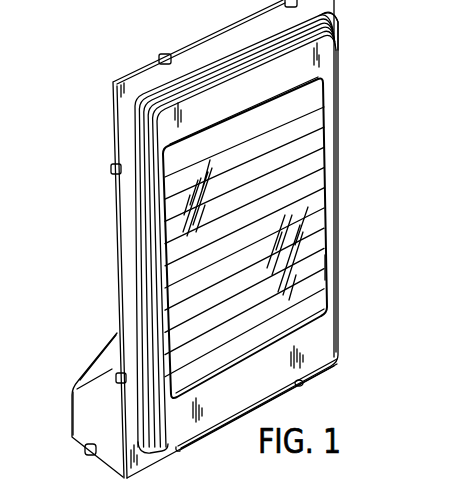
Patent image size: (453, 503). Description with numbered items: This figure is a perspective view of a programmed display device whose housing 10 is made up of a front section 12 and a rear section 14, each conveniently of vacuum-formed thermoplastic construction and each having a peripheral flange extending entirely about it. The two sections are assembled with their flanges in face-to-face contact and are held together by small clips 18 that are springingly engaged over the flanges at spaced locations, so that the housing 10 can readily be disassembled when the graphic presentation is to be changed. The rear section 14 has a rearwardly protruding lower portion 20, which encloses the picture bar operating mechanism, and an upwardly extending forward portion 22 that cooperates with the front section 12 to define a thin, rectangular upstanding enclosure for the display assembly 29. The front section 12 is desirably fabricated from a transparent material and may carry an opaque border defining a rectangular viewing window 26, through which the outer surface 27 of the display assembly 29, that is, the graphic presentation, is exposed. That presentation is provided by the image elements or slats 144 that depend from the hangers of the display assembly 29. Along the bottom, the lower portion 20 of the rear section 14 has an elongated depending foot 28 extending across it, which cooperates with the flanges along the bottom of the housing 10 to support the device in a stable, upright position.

The housing 10 is at (341, 29).
The front section 12 is at (335, 334).
The rear section 14 is at (85, 419).
The clips 18 is at (167, 55).
The lower portion 20 is at (78, 403).
The forward portion 22 is at (117, 340).
The viewing window 26 is at (331, 178).
The outer surface 27 is at (252, 232).
The foot 28 is at (88, 455).
The display assembly 29 is at (309, 266).
The slats 144 is at (308, 130).